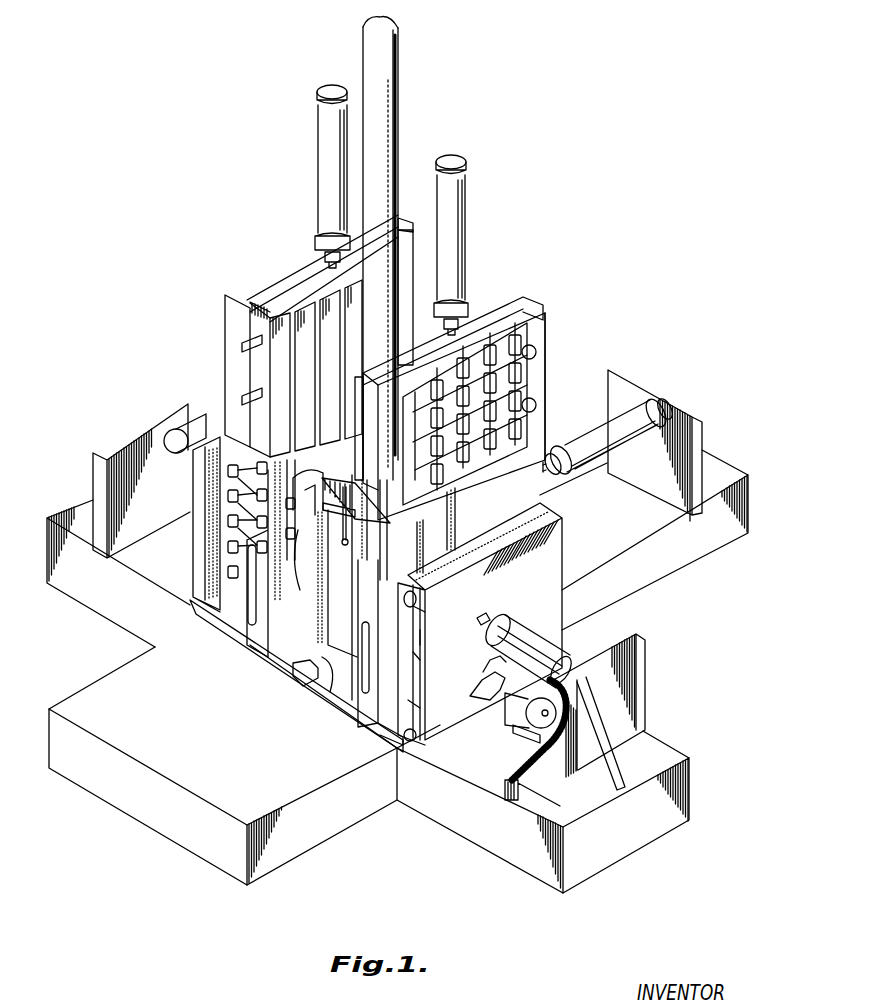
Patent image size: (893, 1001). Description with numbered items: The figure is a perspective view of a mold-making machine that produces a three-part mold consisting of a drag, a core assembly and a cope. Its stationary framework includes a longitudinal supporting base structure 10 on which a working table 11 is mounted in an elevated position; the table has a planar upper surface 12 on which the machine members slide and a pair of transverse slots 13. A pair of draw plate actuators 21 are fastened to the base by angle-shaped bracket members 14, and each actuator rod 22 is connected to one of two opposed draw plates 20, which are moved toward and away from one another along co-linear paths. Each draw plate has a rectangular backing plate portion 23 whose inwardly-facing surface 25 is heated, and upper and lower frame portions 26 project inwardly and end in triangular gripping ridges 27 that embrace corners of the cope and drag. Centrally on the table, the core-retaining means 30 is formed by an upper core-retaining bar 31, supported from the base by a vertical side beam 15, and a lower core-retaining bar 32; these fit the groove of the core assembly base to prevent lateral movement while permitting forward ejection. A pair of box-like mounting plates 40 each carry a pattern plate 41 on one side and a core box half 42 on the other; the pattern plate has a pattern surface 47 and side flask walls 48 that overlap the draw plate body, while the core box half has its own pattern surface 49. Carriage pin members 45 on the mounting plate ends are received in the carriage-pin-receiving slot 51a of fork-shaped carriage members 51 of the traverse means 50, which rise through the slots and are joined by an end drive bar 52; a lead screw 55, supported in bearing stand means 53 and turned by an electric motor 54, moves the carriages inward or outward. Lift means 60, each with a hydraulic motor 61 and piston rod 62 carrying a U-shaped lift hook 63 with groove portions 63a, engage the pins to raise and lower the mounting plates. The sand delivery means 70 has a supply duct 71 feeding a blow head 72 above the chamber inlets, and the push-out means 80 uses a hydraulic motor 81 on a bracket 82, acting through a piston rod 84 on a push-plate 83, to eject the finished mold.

The supporting base structure 10 is at (49, 740).
The working table 11 is at (205, 612).
The upper surface 12 is at (75, 703).
The transverse slots 13 is at (290, 655).
The bracket members 14 is at (93, 483).
The vertical side beam 15 is at (302, 480).
The draw plates 20 is at (190, 580).
The draw plate actuators 21 is at (188, 462).
The actuator rod 22 is at (484, 615).
The backing plate portion 23 is at (428, 637).
The inwardly-facing surface 25 is at (428, 658).
The frame portions 26 is at (200, 480).
The gripping ridges 27 is at (428, 622).
The core-retaining means 30 is at (300, 535).
The upper core-retaining bar 31 is at (318, 495).
The lower core-retaining bar 32 is at (298, 676).
The mounting plates 40 is at (250, 425).
The pattern plate 41 is at (225, 303).
The core box half 42 is at (413, 262).
The carriage pin members 45 is at (242, 345).
The pattern surface 47 is at (525, 318).
The flask walls 48 is at (471, 410).
The pattern surface of core box half 49 is at (262, 360).
The traverse means 50 is at (421, 752).
The carriage members 51 is at (268, 625).
The carriage-pin-receiving slot 51a is at (256, 600).
The end drive bar 52 is at (478, 700).
The bearing stand means 53 is at (500, 715).
The electric motor 54 is at (535, 730).
The lead screw 55 is at (500, 665).
The lift means 60 is at (311, 247).
The hydraulic motor 61 is at (318, 155).
The piston rod 62 is at (325, 262).
The lift hook 63 is at (410, 224).
The groove portions 63a is at (250, 385).
The sand delivery means 70 is at (404, 298).
The supply duct 71 is at (398, 62).
The blow head 72 is at (348, 542).
The push-out means 80 is at (609, 459).
The hydraulic motor 81 is at (625, 440).
The bracket 82 is at (702, 437).
The push-plate 83 is at (548, 505).
The piston rod 84 is at (562, 470).